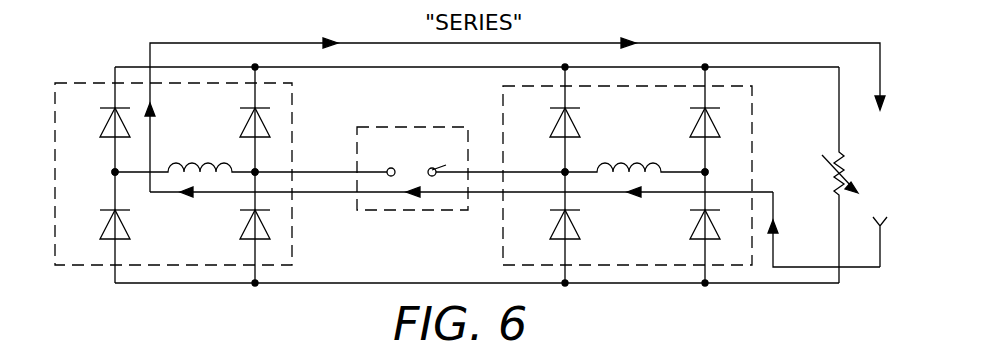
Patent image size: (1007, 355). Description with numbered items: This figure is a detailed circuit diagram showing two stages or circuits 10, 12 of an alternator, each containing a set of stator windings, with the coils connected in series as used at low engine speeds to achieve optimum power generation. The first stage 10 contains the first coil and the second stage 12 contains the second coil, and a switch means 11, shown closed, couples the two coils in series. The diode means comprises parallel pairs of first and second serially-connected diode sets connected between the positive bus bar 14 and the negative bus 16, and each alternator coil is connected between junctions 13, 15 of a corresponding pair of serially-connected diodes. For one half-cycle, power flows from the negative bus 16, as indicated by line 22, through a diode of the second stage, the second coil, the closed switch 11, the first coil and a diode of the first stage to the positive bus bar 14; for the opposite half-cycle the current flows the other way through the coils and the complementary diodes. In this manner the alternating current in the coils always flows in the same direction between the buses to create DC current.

The first stage circuit 10 is at (84, 83).
The switch means 11 is at (420, 127).
The second stage circuit 12 is at (752, 122).
The junction 13 is at (115, 172).
The positive bus bar 14 is at (800, 68).
The junction 15 is at (255, 172).
The negative bus 16 is at (793, 283).
The line indicating current flow 22 is at (773, 250).